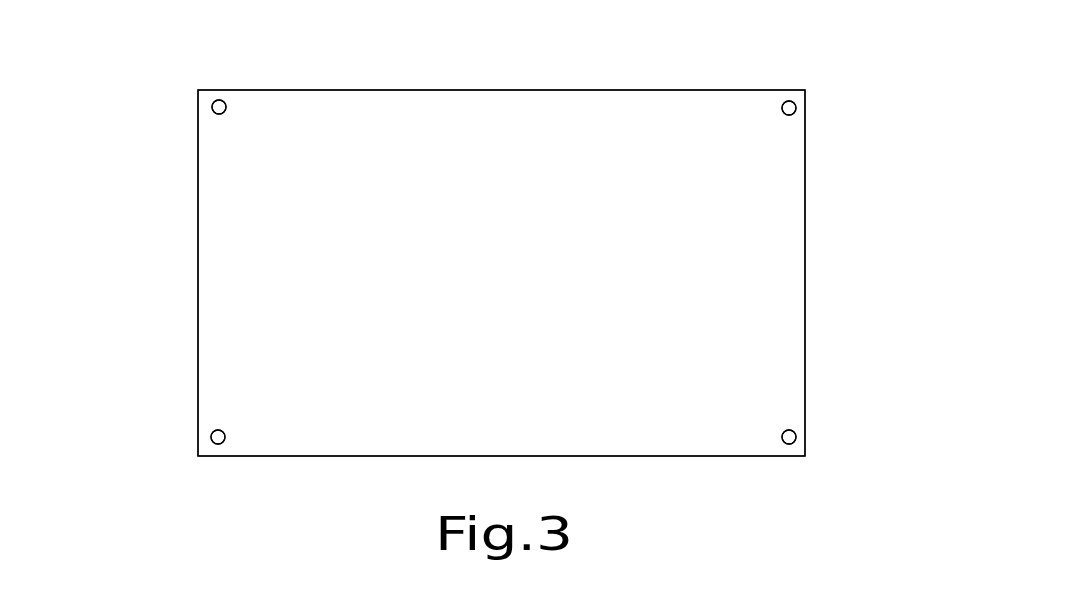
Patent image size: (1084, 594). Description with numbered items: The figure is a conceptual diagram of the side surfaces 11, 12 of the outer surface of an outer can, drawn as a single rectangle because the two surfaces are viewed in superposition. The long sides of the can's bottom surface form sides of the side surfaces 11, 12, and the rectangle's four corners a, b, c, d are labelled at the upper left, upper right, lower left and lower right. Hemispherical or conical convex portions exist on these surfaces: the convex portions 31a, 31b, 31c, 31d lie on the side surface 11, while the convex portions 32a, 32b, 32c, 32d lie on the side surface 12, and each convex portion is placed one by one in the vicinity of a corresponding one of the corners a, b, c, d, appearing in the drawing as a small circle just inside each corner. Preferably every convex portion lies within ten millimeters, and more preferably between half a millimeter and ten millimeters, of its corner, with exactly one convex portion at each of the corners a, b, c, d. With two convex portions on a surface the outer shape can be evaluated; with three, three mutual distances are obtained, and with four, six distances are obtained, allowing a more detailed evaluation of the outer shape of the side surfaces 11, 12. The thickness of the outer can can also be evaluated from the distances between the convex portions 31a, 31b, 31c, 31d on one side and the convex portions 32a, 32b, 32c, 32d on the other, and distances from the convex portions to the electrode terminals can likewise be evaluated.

The side surface 11 is at (120, 49).
The side surface 12 is at (501, 273).
The convex portion 31a is at (212, 107).
The convex portion 32a is at (219, 107).
The convex portion 31b is at (796, 108).
The convex portion 32b is at (789, 108).
The convex portion 31c is at (211, 437).
The convex portion 32c is at (218, 437).
The convex portion 31d is at (796, 437).
The convex portion 32d is at (789, 437).
The corner a is at (198, 90).
The corner b is at (805, 91).
The corner c is at (199, 456).
The corner d is at (805, 456).